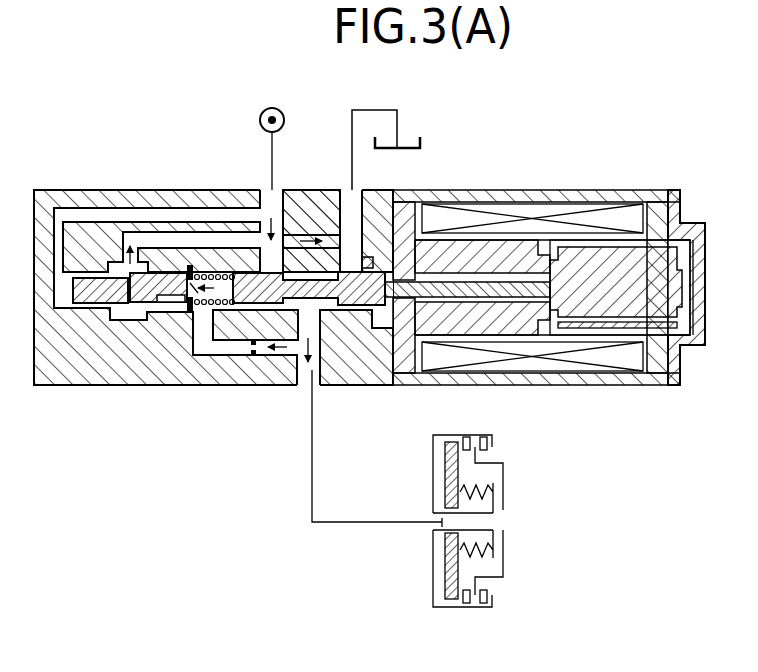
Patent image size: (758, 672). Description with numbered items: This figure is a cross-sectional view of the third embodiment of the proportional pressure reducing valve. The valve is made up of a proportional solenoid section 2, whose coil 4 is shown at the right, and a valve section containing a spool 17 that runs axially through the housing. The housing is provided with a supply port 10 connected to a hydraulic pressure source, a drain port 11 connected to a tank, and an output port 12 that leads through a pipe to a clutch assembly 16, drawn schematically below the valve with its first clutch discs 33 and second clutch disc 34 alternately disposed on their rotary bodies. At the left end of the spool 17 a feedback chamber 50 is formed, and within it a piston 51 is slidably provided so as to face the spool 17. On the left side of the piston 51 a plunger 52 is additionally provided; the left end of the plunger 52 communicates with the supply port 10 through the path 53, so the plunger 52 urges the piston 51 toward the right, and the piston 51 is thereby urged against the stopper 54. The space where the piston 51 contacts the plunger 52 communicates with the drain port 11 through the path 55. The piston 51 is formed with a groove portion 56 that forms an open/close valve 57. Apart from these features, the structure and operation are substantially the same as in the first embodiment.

The proportional solenoid section 2 is at (602, 172).
The coil 4 is at (552, 207).
The supply port 10 is at (265, 192).
The drain port 11 is at (350, 192).
The output port 12 is at (316, 374).
The clutch assembly 16 is at (541, 513).
The spool 17 is at (353, 296).
The first clutch discs 33 is at (484, 604).
The second clutch disc 34 is at (478, 584).
The feedback chamber 50 is at (196, 306).
The piston 51 is at (138, 306).
The plunger 52 is at (90, 310).
The path 53 is at (92, 215).
The stopper 54 is at (190, 260).
The path 55 is at (168, 240).
The groove portion 56 is at (165, 304).
The open/close valve 57 is at (183, 312).